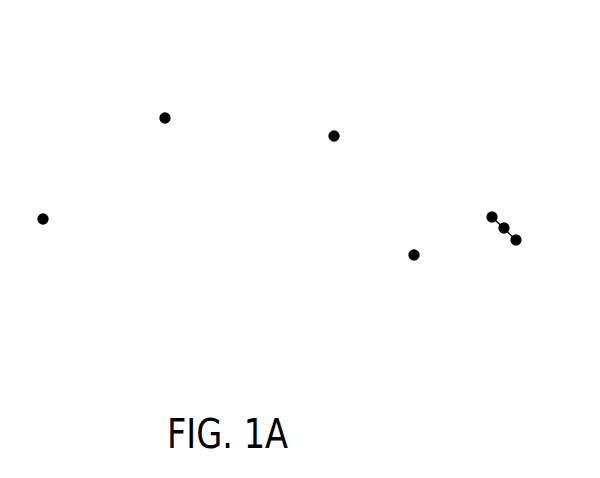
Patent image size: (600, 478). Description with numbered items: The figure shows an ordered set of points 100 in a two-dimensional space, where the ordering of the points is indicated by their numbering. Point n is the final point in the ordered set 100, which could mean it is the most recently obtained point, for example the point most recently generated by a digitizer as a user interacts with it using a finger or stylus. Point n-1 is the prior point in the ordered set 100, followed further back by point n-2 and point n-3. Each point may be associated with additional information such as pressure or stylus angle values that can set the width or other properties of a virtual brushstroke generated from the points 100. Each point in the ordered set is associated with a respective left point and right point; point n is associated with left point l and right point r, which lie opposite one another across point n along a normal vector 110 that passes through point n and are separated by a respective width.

The ordered set of points 100 is at (366, 118).
The normal vector 110 is at (500, 222).
The point n is at (49, 231).
The point n-1 is at (176, 130).
The point n-2 is at (340, 158).
The point n-3 is at (401, 267).
The right point r is at (477, 200).
The left point l is at (528, 260).